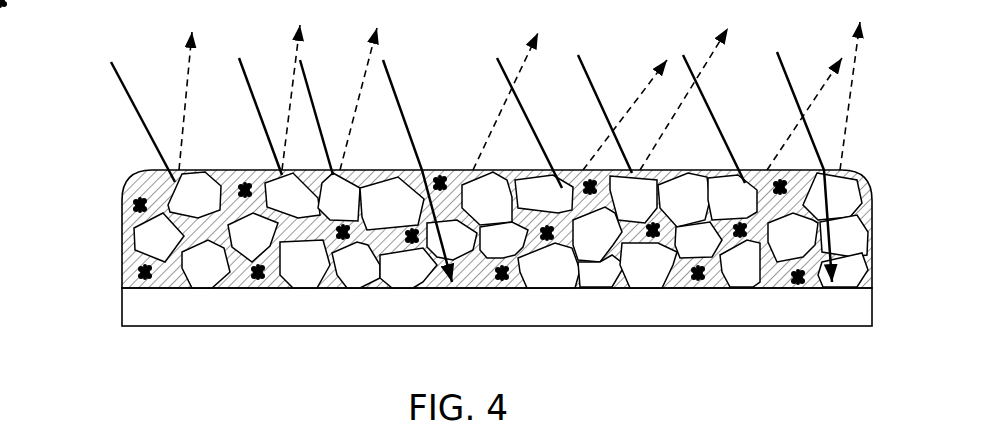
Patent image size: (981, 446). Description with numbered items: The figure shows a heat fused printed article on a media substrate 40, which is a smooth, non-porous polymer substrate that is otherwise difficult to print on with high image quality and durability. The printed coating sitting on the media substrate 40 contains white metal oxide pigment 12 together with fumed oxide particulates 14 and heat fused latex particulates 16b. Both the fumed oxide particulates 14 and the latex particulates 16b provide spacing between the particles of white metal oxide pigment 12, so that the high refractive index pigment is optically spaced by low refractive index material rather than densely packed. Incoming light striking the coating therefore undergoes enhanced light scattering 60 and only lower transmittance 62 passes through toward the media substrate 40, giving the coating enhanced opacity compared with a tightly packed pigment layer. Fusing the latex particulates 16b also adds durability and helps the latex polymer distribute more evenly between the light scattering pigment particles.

The white metal oxide pigment 12 is at (148, 228).
The fumed oxide particulates 14 is at (135, 272).
The latex particulates 16b is at (148, 192).
The media substrate 40 is at (484, 317).
The light scattering 60 is at (502, 100).
The transmittance 62 is at (832, 202).